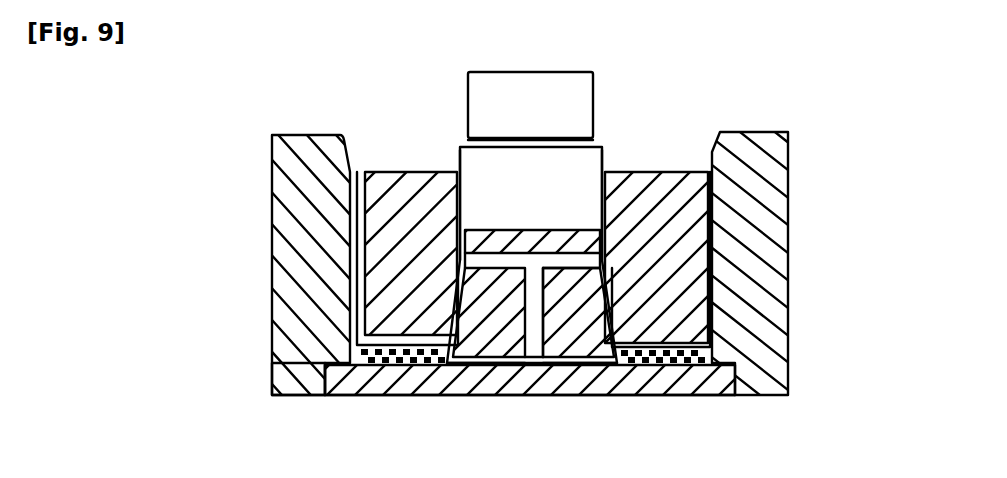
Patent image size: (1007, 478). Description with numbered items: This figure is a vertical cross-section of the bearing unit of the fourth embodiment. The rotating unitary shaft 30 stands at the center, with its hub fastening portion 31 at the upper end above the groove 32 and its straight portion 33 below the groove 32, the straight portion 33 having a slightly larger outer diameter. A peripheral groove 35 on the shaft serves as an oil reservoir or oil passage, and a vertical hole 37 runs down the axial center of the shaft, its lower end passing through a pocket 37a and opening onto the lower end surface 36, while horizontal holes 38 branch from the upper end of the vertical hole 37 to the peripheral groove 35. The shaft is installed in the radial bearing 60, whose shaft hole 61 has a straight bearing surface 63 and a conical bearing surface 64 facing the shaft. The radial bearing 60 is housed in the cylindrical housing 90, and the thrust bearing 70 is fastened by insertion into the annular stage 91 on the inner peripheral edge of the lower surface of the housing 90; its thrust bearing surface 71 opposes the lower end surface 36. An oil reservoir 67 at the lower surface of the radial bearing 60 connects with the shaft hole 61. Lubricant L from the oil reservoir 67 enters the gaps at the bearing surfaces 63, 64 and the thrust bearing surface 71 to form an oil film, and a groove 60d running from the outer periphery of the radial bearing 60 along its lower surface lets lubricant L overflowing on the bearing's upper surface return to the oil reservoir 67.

The rotating unitary shaft 30 is at (576, 169).
The hub fastening portion 31 is at (573, 100).
The groove 32 is at (472, 139).
The straight portion 33 is at (604, 195).
The peripheral groove 35 is at (460, 263).
The lower end surface 36 is at (502, 365).
The vertical hole 37 is at (552, 368).
The pocket 37a is at (525, 365).
The horizontal hole 38 is at (585, 263).
The radial bearing 60 is at (673, 208).
The groove 60d is at (360, 319).
The shaft hole 61 is at (468, 202).
The straight bearing surface 63 is at (598, 217).
The conical bearing surface 64 is at (594, 287).
The oil reservoir 67 is at (421, 372).
The thrust bearing 70 is at (627, 370).
The thrust bearing surface 71 is at (578, 352).
The housing 90 is at (753, 302).
The annular stage 91 is at (330, 395).
The lubricant L is at (678, 394).